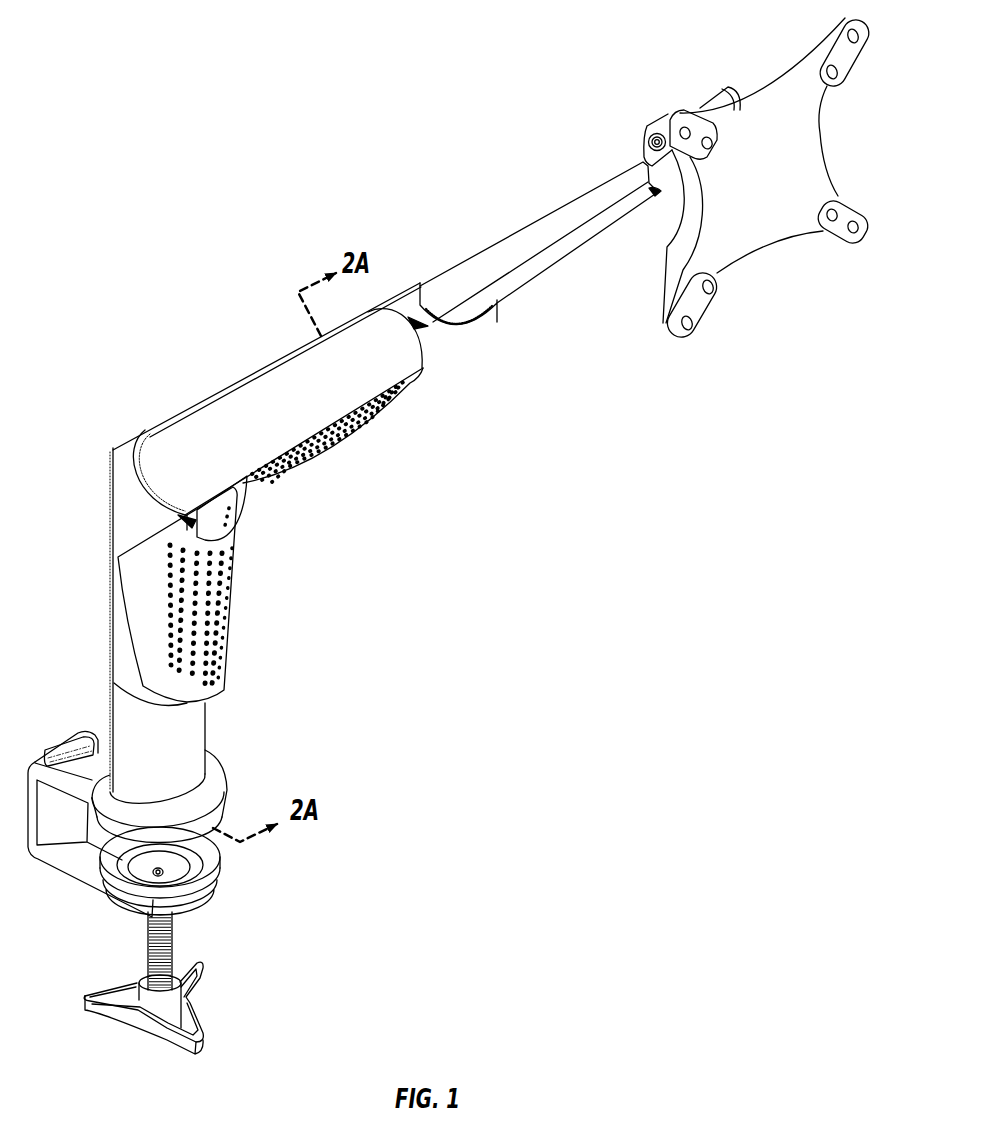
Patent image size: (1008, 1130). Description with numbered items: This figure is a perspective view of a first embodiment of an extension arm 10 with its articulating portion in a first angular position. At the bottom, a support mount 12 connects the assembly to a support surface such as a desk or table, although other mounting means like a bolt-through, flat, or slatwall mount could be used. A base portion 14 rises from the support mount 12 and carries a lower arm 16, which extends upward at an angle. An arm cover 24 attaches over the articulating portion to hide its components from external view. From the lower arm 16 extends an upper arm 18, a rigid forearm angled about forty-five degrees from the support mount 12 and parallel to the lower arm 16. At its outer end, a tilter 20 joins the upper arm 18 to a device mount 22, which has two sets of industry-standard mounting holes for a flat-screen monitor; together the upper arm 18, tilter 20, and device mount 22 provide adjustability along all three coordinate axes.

The extension arm 10 is at (207, 42).
The support mount 12 is at (240, 910).
The base portion 14 is at (270, 578).
The lower arm 16 is at (238, 363).
The upper arm 18 is at (506, 233).
The tilter 20 is at (654, 124).
The device mount 22 is at (768, 270).
The arm cover 24 is at (175, 432).